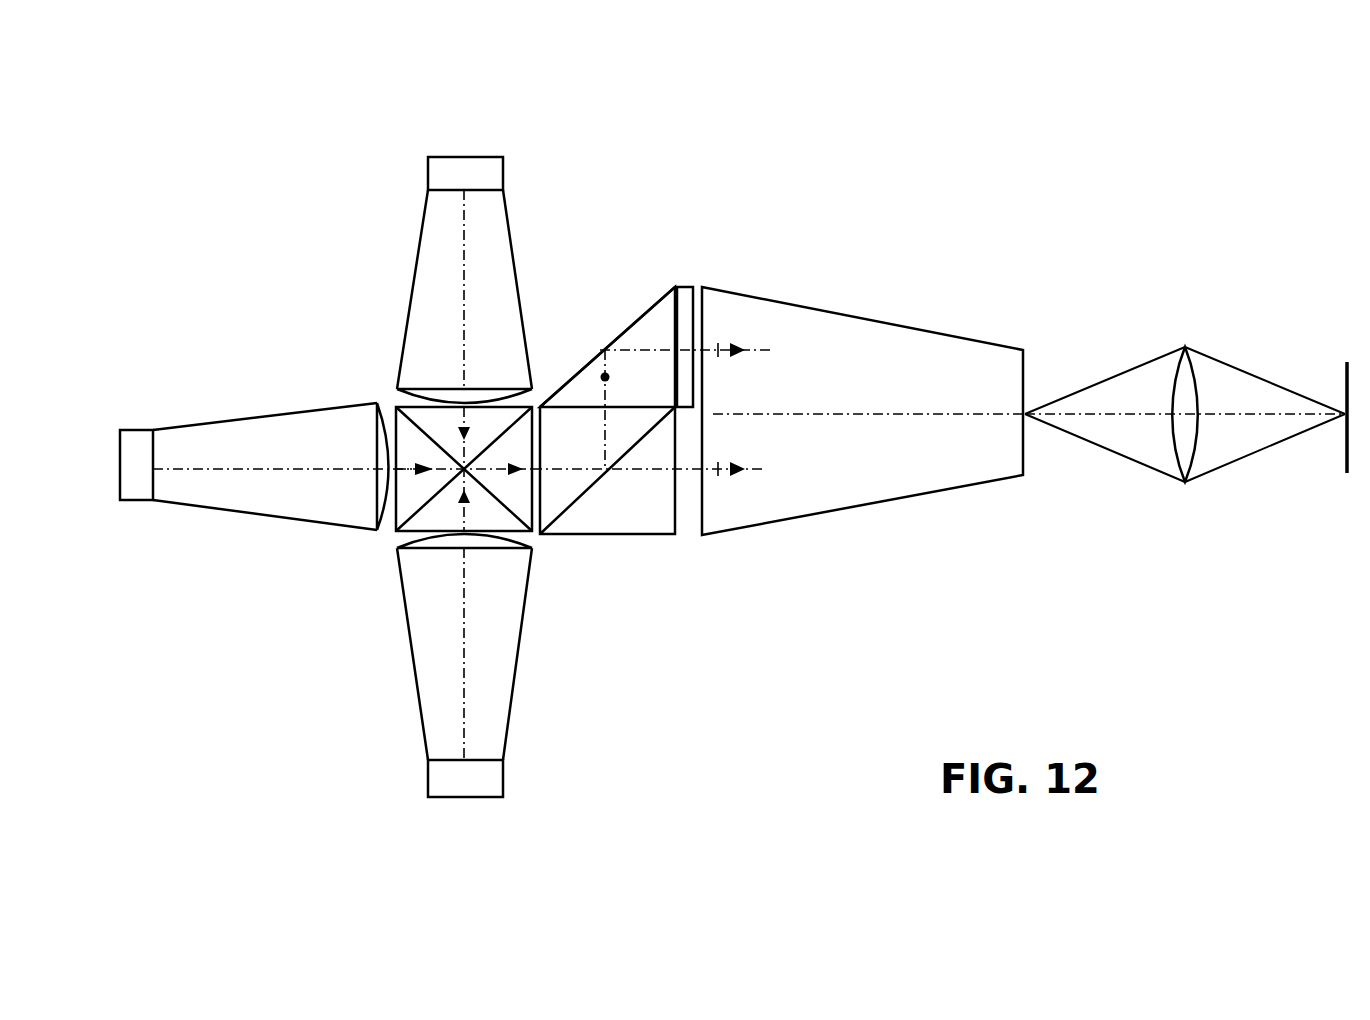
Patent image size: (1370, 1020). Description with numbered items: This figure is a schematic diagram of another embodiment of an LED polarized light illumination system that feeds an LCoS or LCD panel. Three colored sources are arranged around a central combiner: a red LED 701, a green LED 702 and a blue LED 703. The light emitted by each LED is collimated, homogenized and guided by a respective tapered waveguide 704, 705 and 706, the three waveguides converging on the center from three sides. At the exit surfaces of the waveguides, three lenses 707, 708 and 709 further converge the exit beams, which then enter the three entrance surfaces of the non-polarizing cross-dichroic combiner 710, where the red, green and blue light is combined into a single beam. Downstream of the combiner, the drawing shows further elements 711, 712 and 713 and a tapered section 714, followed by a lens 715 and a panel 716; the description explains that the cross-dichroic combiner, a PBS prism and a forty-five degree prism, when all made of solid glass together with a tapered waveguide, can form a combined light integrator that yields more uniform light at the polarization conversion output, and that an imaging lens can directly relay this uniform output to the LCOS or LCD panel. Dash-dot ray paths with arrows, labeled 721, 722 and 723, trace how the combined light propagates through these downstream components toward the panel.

The red LED 701 is at (450, 170).
The green LED 702 is at (138, 493).
The blue LED 703 is at (452, 778).
The tapered waveguide 704 is at (433, 295).
The tapered waveguide 705 is at (268, 493).
The tapered waveguide 706 is at (498, 638).
The lens 707 is at (410, 400).
The lens 708 is at (387, 540).
The lens 709 is at (510, 538).
The non-polarizing cross-dichroic combiner 710 is at (535, 395).
The prism 711 is at (643, 517).
The reflecting surface 712 is at (643, 345).
The plate 713 is at (683, 320).
The tapered light tunnel 714 is at (957, 478).
The projection lens 715 is at (1190, 347).
The screen 716 is at (1345, 380).
The light beam 721 is at (727, 485).
The light beam 722 is at (603, 374).
The light beam 723 is at (727, 340).